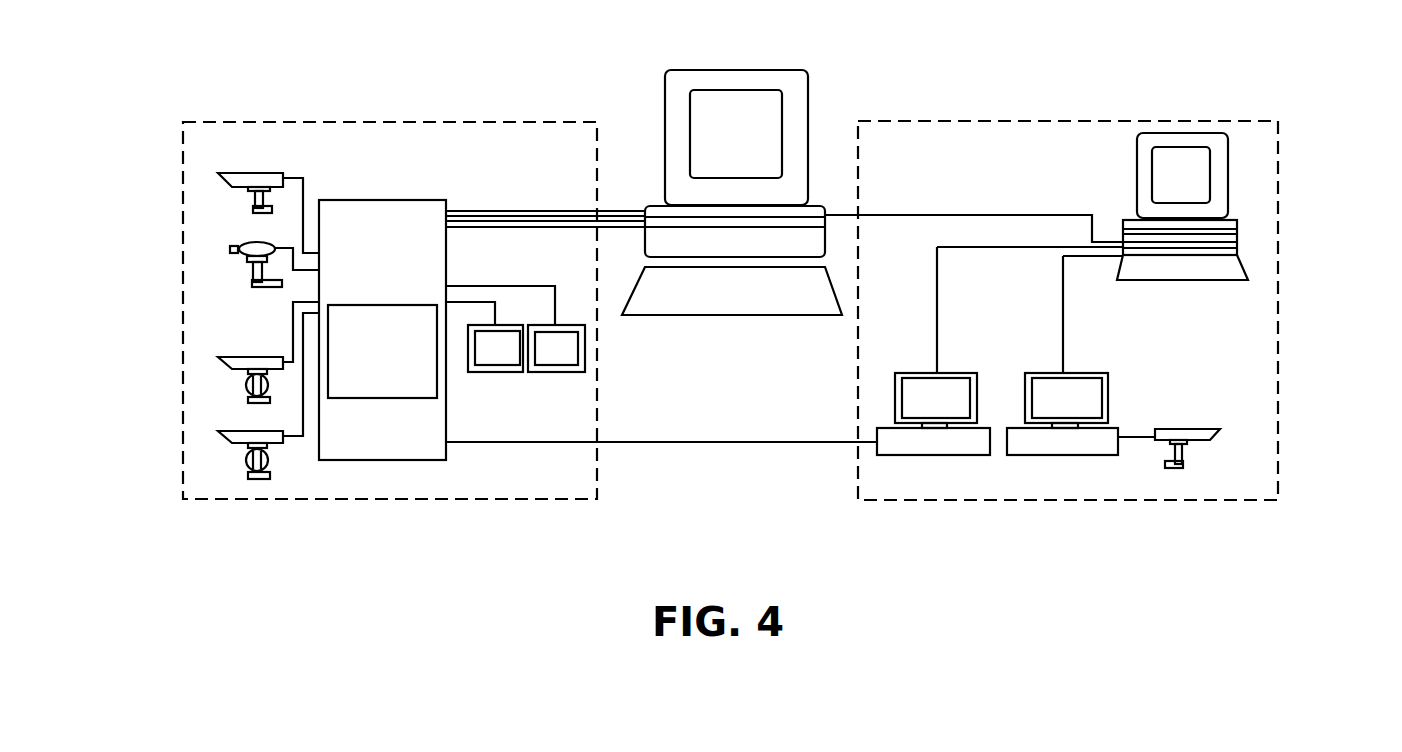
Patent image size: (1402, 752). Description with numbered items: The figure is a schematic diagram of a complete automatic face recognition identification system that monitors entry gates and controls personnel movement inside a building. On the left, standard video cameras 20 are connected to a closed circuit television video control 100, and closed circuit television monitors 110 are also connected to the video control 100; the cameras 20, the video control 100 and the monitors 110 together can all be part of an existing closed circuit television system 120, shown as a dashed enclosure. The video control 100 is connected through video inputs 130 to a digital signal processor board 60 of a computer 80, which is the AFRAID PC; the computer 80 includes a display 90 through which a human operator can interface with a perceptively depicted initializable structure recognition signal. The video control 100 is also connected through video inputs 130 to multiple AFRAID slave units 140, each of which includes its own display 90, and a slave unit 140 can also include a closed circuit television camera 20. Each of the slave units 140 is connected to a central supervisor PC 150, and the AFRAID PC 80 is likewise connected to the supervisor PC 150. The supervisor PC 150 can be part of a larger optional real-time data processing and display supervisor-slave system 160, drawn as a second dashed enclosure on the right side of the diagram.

The video cameras 20 is at (222, 212).
The digital signal processor board 60 is at (813, 222).
The computer 80 is at (660, 302).
The display 90 is at (725, 112).
The closed circuit television video control 100 is at (380, 202).
The closed circuit television monitors 110 is at (510, 373).
The existing closed circuit television system 120 is at (213, 118).
The video inputs 130 is at (512, 212).
The multiple AFRAID slave units 140 is at (887, 455).
The central supervisor PC 150 is at (1238, 241).
The real-time data processing and display supervisor-slave system 160 is at (1017, 119).